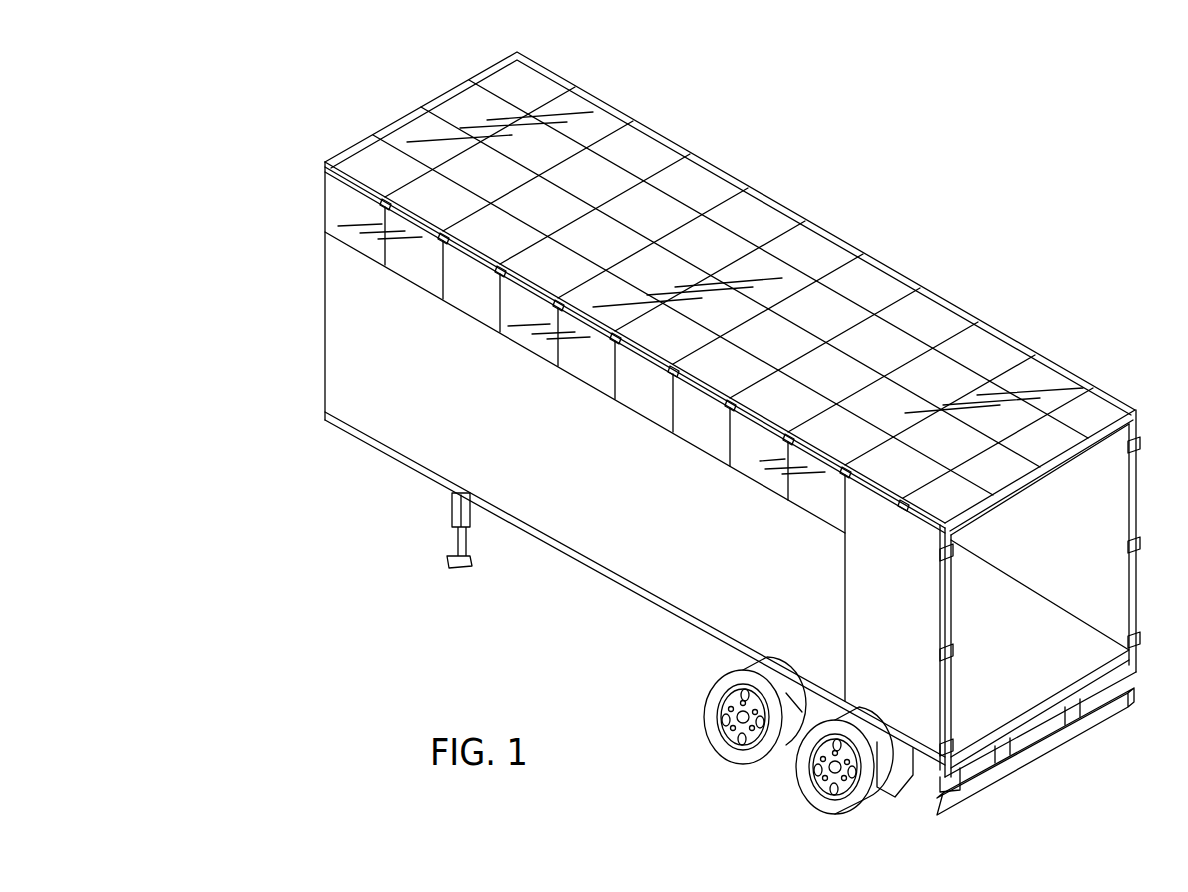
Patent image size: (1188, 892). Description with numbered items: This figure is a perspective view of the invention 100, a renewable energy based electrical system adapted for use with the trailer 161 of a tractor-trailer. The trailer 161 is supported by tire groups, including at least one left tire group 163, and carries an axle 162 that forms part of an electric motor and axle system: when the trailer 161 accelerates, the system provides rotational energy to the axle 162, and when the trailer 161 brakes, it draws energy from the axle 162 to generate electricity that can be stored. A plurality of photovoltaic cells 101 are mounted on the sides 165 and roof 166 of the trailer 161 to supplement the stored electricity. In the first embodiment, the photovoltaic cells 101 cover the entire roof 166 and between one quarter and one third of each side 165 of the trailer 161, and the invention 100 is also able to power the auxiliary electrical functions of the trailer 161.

The invention 100 is at (1022, 178).
The photovoltaic cells 101 is at (700, 183).
The trailer 161 is at (392, 433).
The axle 162 is at (742, 718).
The left tire group 163 is at (823, 795).
The sides 165 is at (352, 215).
The roof 166 is at (988, 352).